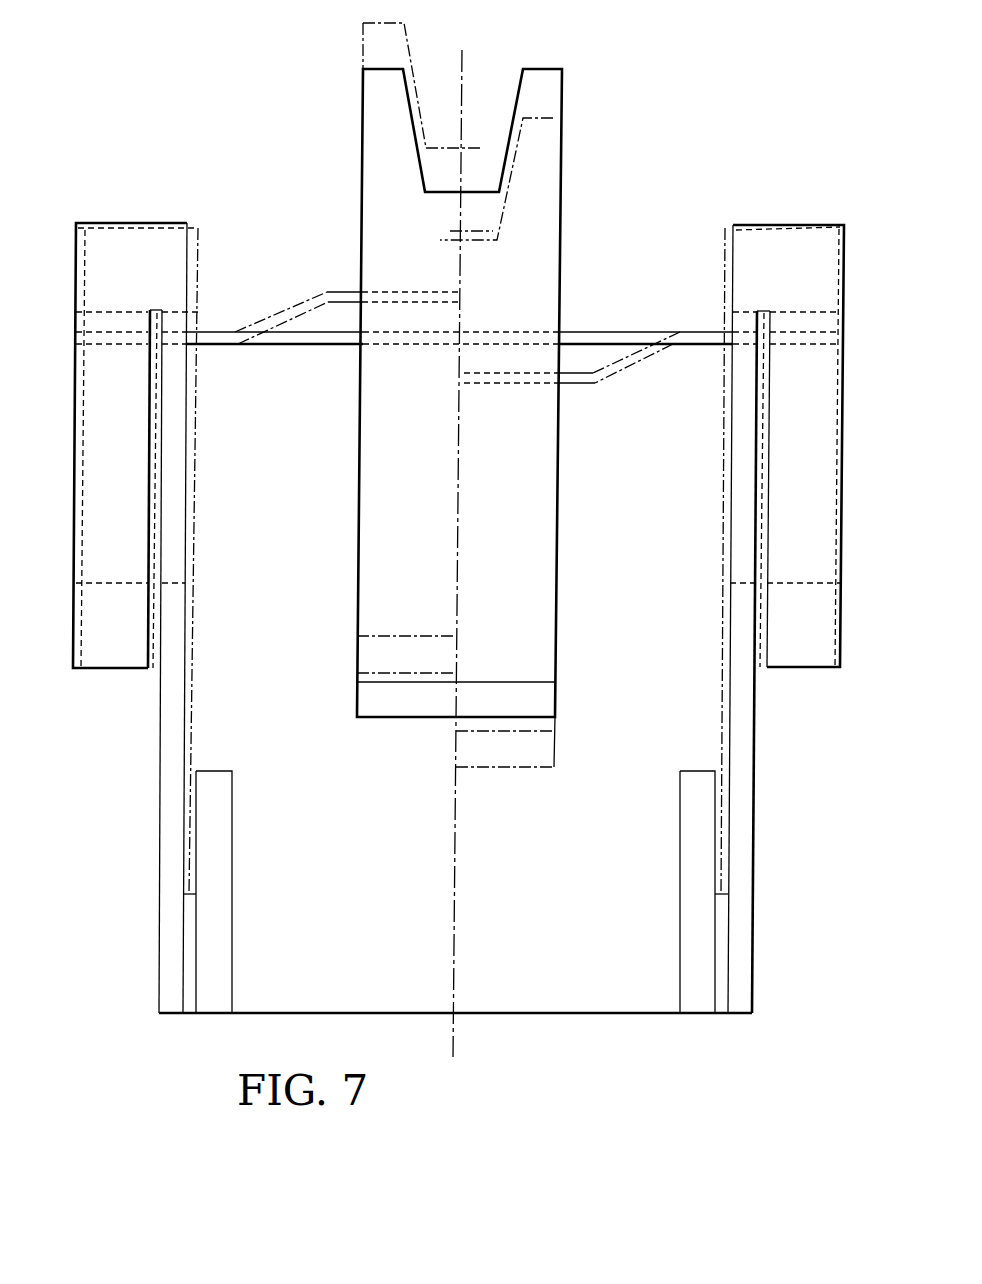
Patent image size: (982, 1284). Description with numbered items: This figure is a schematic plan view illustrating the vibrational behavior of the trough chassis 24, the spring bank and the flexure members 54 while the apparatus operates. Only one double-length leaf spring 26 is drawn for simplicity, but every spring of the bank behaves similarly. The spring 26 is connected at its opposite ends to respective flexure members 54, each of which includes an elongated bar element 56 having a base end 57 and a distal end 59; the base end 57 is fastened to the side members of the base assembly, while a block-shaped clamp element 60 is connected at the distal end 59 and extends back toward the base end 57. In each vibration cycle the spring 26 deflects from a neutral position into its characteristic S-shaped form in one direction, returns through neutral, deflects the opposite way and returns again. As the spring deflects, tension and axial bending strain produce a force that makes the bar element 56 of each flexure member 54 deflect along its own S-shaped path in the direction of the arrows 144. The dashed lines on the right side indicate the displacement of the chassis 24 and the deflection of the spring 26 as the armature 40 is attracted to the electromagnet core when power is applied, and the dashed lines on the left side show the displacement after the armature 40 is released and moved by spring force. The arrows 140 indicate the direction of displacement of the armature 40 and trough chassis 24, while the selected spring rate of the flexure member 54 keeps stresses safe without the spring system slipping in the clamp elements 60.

The trough chassis 24 is at (363, 48).
The leaf spring 26 is at (590, 332).
The armature 40 is at (357, 655).
The flexure member 54 is at (133, 725).
The elongated bar element 56 is at (198, 412).
The base end 57 is at (150, 950).
The distal end 59 is at (733, 222).
The clamp element 60 is at (110, 670).
The arrows indicating armature and chassis displacement 140 is at (599, 65).
The arrows indicating flexure member displacement 144 is at (740, 192).